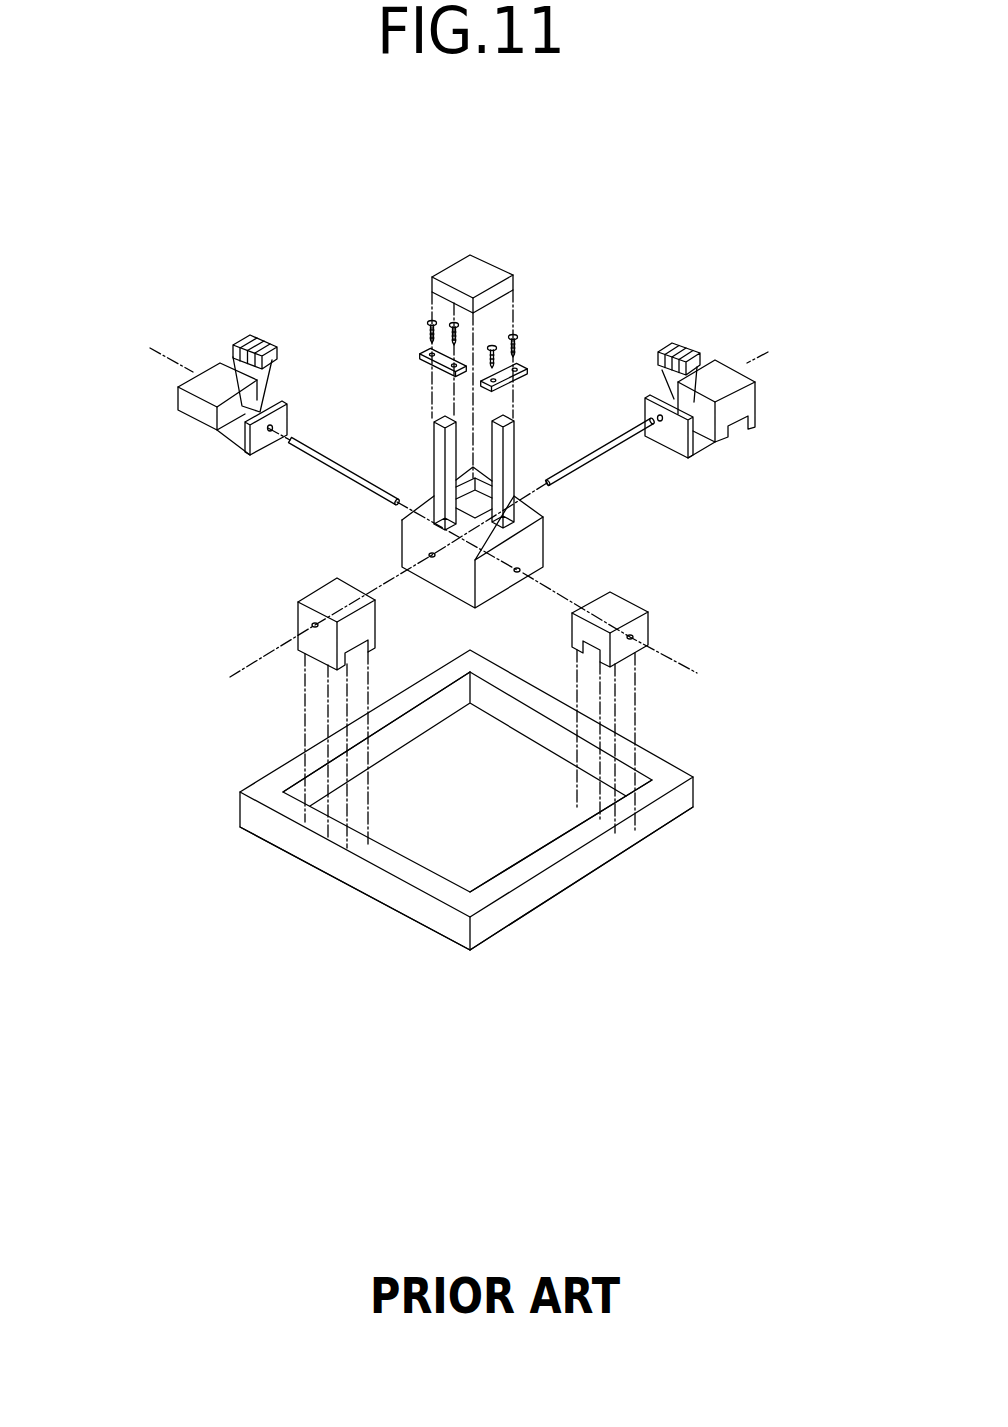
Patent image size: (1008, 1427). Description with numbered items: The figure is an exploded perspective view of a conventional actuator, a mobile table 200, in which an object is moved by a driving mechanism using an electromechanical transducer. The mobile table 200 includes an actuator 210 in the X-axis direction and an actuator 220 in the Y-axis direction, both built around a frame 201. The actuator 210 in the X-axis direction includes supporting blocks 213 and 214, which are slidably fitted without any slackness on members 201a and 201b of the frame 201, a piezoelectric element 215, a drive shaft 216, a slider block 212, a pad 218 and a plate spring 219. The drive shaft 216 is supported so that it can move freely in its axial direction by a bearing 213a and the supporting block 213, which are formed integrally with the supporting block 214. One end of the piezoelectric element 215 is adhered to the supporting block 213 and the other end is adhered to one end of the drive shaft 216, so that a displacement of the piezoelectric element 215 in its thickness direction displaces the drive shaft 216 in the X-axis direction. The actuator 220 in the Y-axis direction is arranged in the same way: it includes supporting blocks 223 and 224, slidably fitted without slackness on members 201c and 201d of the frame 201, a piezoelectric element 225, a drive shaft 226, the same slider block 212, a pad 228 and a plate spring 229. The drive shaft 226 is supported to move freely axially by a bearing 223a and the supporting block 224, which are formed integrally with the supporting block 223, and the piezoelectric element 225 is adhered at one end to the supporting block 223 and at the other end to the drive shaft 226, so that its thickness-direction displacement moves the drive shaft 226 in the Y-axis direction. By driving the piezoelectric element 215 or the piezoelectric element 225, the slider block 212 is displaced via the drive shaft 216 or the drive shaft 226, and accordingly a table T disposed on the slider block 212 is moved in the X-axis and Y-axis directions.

The mobile table 200 is at (505, 1163).
The frame 201 is at (660, 768).
The member of frame 201a is at (512, 683).
The member of frame 201b is at (397, 862).
The member of frame 201c is at (438, 680).
The member of frame 201d is at (555, 850).
The actuator in X-axis direction 210 is at (694, 504).
The slider block 212 is at (547, 557).
The supporting block 213 is at (738, 405).
The bearing 213a is at (715, 447).
The supporting block 214 is at (298, 613).
The piezoelectric element 215 is at (676, 337).
The drive shaft 216 is at (613, 457).
The pad 218 is at (434, 430).
The plate spring 219 is at (427, 347).
The actuator in Y-axis direction 220 is at (274, 504).
The supporting block 223 is at (176, 403).
The bearing 223a is at (220, 437).
The supporting block 224 is at (650, 625).
The piezoelectric element 225 is at (258, 340).
The drive shaft 226 is at (327, 453).
The pad 228 is at (514, 430).
The plate spring 229 is at (518, 362).
The table T is at (477, 268).